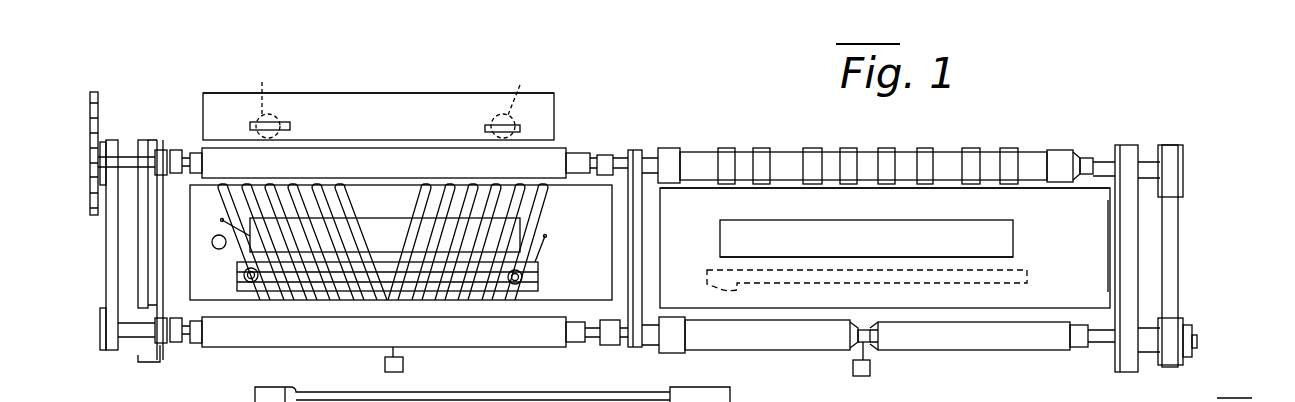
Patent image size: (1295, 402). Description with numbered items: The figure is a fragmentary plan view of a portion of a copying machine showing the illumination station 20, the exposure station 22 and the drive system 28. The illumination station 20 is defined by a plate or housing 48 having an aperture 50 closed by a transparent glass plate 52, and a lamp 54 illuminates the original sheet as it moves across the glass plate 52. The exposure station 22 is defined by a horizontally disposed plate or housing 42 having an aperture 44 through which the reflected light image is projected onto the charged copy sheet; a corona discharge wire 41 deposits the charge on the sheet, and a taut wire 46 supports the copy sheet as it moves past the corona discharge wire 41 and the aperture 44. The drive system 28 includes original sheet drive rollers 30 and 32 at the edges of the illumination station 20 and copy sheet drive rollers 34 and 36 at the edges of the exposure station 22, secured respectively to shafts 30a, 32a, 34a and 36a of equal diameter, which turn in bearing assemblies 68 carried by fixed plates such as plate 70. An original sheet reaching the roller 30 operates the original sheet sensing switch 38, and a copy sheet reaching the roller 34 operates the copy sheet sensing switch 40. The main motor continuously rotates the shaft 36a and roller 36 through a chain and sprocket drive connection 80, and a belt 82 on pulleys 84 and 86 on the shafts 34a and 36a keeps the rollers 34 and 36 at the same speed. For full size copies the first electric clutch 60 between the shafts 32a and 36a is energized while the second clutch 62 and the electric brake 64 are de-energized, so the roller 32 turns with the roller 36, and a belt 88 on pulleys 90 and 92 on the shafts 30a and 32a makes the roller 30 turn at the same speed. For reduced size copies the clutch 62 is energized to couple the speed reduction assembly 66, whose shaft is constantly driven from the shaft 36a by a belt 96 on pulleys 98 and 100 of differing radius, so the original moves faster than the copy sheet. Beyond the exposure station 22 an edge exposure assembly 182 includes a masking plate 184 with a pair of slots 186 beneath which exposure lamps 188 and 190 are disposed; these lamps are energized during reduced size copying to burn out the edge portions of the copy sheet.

The illumination station 20 is at (931, 198).
The exposure station 22 is at (402, 188).
The drive system 28 is at (1210, 171).
The original sheet drive roller 30 is at (750, 346).
The shaft 30a is at (1098, 333).
The original sheet drive roller 32 is at (760, 150).
The shaft 32a is at (1100, 160).
The copy sheet drive roller 34 is at (237, 333).
The shaft 34a is at (130, 340).
The copy sheet drive roller 36 is at (325, 148).
The shaft 36a is at (130, 157).
The original sheet sensing switch 38 is at (872, 367).
The copy sheet sensing switch 40 is at (406, 363).
The corona discharge wire 41 is at (295, 278).
The plate or housing 42 is at (575, 185).
The aperture 44 is at (521, 233).
The taut wire 46 is at (352, 198).
The plate or housing 48 is at (1045, 198).
The aperture 50 is at (1003, 255).
The transparent glass plate 52 is at (1000, 243).
The lamp 54 is at (710, 289).
The first electric clutch 60 is at (670, 147).
The second clutch 62 is at (672, 353).
The electric brake 64 is at (1148, 360).
The speed reduction assembly 66 is at (630, 352).
The bearing assemblies 68 is at (173, 150).
The fixed plate or wall 70 is at (160, 150).
The chain and sprocket drive connection 80 is at (97, 93).
The belt 82 is at (106, 250).
The pulley 84 is at (103, 180).
The pulley 86 is at (101, 346).
The belt 88 is at (1176, 250).
The pulley 90 is at (1183, 146).
The pulley 92 is at (1178, 320).
The belt 96 is at (637, 240).
The pulley 98 is at (628, 150).
The pulley 100 is at (628, 325).
The edge exposure assembly 182 is at (568, 82).
The masking plate 184 is at (438, 100).
The apertures or slots 186 is at (282, 122).
The exposure lamp 188 is at (254, 91).
The exposure lamp 190 is at (512, 91).